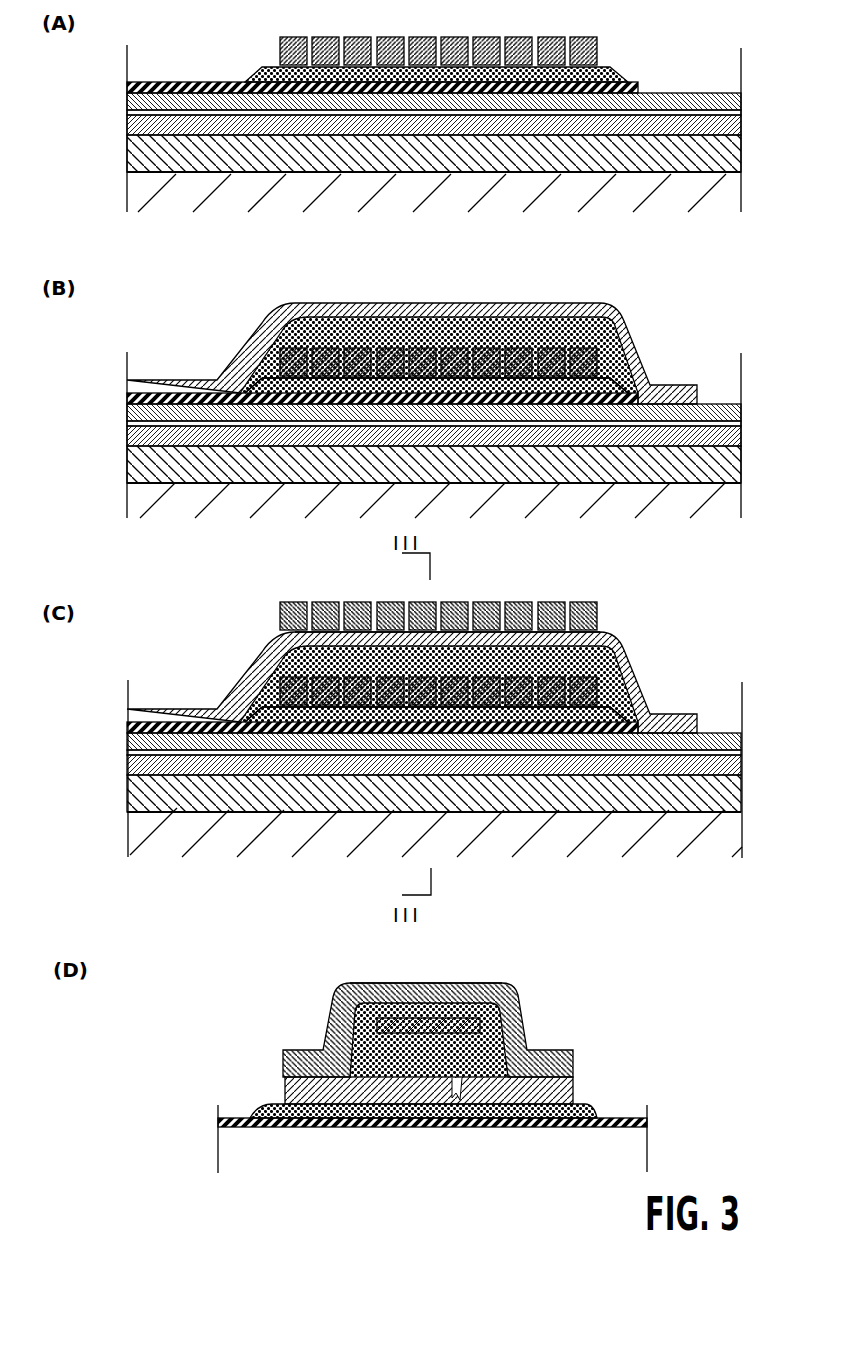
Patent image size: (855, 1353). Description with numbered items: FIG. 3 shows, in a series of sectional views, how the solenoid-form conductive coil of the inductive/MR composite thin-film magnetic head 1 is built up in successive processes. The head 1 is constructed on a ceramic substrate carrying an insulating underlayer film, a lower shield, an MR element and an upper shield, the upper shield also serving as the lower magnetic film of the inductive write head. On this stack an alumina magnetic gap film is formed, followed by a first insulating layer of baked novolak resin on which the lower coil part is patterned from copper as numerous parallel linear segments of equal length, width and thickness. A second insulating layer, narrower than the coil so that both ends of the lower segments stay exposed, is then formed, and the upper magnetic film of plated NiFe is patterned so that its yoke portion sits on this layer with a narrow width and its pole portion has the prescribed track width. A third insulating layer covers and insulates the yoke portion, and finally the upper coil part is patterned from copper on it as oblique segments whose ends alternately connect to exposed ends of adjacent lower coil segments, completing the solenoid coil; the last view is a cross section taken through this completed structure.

The thin film magnetic head 1 is at (218, 1152).